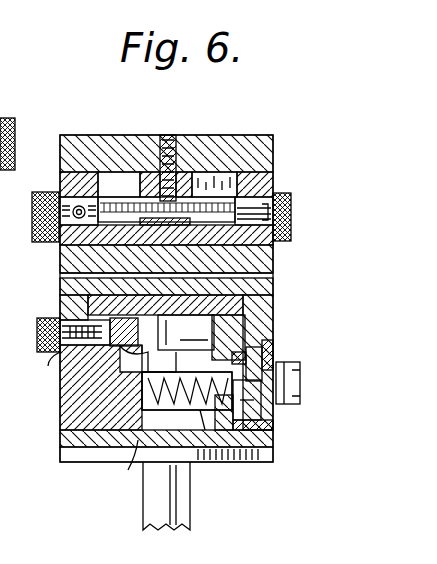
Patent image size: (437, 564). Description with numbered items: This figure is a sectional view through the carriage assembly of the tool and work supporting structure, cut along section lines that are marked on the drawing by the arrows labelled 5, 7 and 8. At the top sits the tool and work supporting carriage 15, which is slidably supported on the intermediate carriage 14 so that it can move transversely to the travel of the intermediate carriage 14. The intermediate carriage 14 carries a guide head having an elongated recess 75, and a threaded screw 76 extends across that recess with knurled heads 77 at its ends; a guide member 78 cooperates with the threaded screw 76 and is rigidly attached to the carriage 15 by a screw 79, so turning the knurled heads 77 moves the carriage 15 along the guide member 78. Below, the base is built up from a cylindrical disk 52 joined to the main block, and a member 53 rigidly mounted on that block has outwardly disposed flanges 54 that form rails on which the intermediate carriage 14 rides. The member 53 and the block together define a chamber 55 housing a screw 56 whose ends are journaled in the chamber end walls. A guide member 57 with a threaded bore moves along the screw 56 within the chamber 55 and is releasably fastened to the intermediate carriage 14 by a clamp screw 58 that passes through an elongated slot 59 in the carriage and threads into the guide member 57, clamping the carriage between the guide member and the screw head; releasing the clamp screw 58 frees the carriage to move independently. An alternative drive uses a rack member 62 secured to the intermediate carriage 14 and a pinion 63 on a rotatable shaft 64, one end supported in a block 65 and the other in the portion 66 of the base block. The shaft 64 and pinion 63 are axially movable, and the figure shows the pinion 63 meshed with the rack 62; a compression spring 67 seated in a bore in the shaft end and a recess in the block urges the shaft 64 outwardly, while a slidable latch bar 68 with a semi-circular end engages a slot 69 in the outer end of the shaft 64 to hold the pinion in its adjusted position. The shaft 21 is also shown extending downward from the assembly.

The section line 5- 5 is at (149, 111).
The section line 7- 7 is at (24, 318).
The section line 8- 8 is at (260, 290).
The intermediate carriage 14 is at (316, 271).
The tool and work supporting carriage 15 is at (82, 136).
The shaft 21 is at (150, 490).
The cylindrical disk 52 is at (60, 449).
The member 53 is at (62, 286).
The flanges 54 is at (246, 305).
The chamber 55 is at (112, 400).
The screw 56 is at (96, 384).
The guide member 57 is at (186, 332).
The clamp screw 58 is at (68, 368).
The elongated slot 59 is at (64, 308).
The rack member 62 is at (262, 332).
The pinion 63 is at (258, 430).
The rotatable shaft 64 is at (265, 446).
The block 65 is at (215, 432).
The portion of the block 66 is at (270, 352).
The compression spring 67 is at (125, 463).
The slidable latch bar 68 is at (285, 372).
The slot 69 is at (240, 410).
The elongated recess 75 is at (215, 180).
The threaded screw 76 is at (119, 184).
The knurled heads 77 is at (36, 215).
The guide member 78 is at (198, 178).
The screw 79 is at (130, 143).